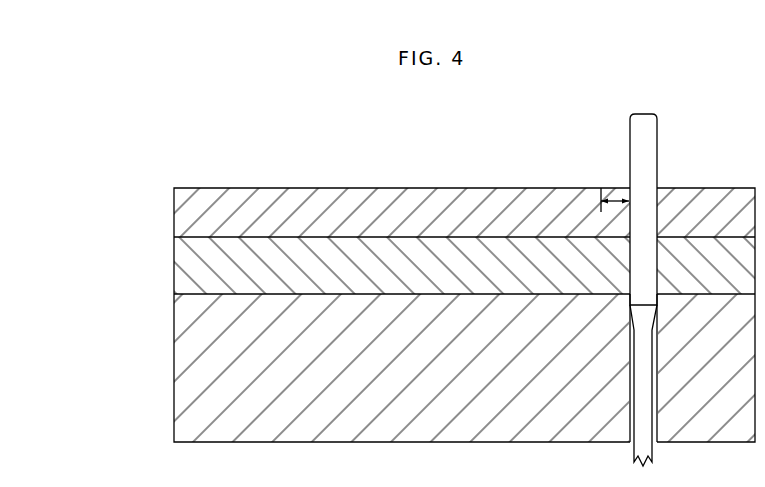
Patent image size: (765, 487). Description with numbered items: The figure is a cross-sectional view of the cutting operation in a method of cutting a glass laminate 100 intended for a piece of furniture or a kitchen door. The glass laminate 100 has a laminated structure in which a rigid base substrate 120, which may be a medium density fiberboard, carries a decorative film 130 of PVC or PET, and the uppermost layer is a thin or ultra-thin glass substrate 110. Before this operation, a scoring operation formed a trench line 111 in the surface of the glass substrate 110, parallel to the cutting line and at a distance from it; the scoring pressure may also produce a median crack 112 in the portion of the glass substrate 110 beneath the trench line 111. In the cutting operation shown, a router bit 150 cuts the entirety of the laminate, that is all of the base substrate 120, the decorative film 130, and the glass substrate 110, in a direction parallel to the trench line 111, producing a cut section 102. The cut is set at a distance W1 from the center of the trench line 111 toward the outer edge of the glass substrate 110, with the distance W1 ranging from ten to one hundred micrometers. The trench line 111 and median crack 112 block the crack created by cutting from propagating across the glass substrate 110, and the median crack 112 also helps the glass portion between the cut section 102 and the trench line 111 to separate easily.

The glass laminate 100 is at (233, 149).
The glass substrate 110 is at (181, 211).
The decorative film 130 is at (181, 259).
The base substrate 120 is at (183, 363).
The cut section 102 is at (634, 198).
The router bit 150 is at (652, 146).
The trench line 111 is at (597, 185).
The median crack 112 is at (594, 214).
The distance between the center of the trench line and the cut section W1 is at (615, 214).